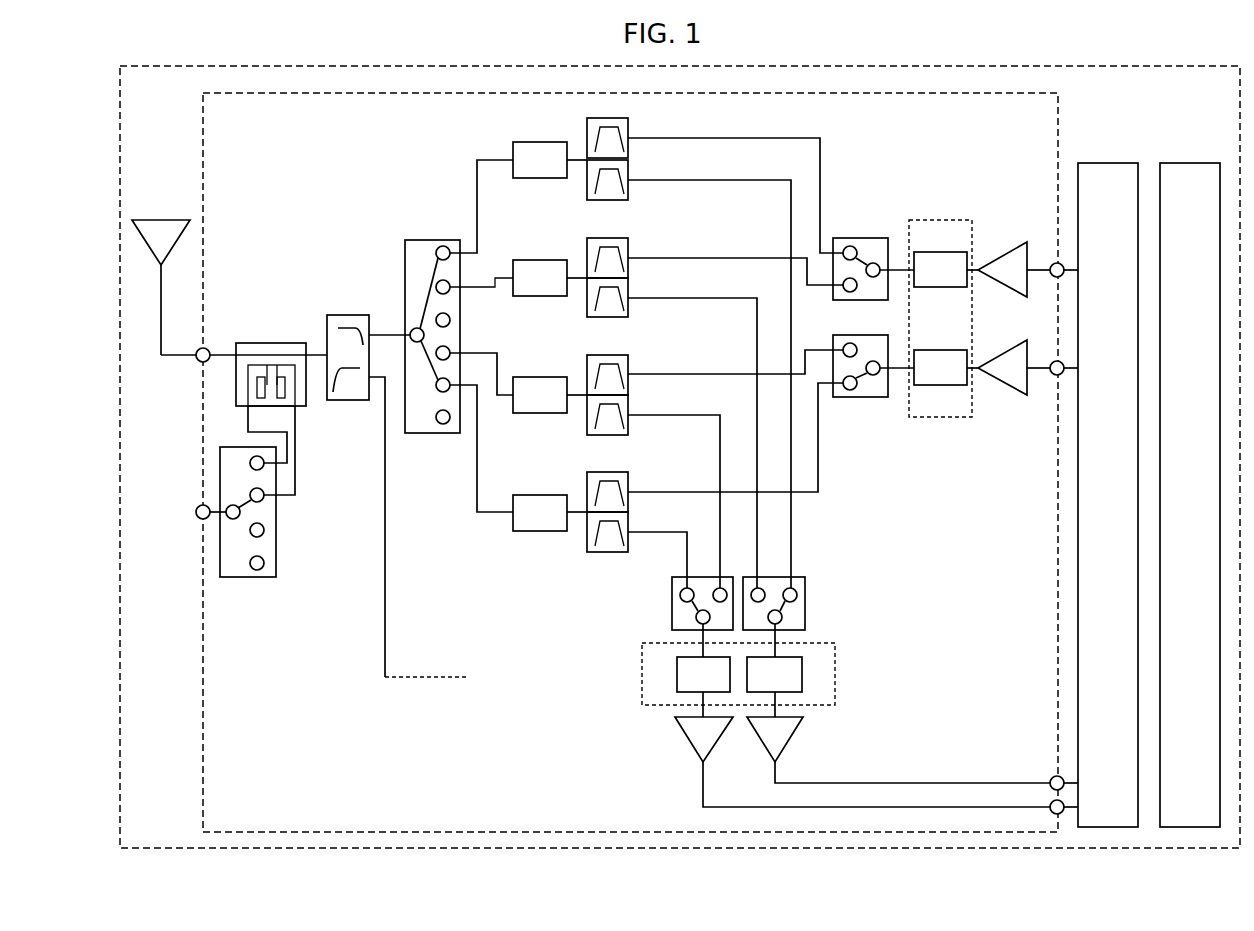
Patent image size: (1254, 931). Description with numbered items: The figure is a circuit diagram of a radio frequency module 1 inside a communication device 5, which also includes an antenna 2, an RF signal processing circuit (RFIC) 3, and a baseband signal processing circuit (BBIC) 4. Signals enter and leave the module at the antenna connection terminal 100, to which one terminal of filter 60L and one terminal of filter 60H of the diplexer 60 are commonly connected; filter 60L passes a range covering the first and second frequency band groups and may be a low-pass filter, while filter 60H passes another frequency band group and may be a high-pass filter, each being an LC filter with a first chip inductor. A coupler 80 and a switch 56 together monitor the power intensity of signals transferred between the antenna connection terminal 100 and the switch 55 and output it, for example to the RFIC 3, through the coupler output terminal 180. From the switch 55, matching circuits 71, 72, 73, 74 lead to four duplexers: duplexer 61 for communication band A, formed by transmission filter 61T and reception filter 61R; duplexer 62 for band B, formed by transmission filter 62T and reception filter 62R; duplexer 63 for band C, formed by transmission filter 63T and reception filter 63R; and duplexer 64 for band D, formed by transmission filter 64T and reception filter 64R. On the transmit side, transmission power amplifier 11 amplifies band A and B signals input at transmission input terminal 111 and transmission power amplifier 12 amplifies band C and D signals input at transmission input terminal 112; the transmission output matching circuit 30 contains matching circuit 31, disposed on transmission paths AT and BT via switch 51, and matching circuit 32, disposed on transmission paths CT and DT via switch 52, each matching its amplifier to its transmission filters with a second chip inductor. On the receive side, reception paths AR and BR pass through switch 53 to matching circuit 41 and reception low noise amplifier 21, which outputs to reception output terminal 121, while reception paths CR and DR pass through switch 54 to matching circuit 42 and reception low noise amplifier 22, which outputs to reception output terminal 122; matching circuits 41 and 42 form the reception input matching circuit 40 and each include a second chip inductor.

The radio frequency module 1 is at (1022, 97).
The antenna 2 is at (168, 220).
The RF signal processing circuit (RFIC) 3 is at (1095, 163).
The baseband signal processing circuit (BBIC) 4 is at (1177, 163).
The communication device 5 is at (1197, 67).
The transmission power amplifier 11 is at (1000, 290).
The transmission power amplifier 12 is at (1000, 390).
The reception low noise amplifier 21 is at (795, 738).
The reception low noise amplifier 22 is at (680, 738).
The transmission output matching circuit 30 is at (947, 310).
The matching circuit 31 is at (925, 252).
The matching circuit 32 is at (925, 350).
The reception input matching circuit 40 is at (710, 670).
The matching circuit 41 is at (802, 675).
The matching circuit 42 is at (677, 675).
The switch 51 is at (848, 238).
The switch 52 is at (850, 335).
The switch 53 is at (805, 580).
The switch 54 is at (672, 582).
The switch 55 is at (412, 240).
The switch 56 is at (258, 578).
The diplexer 60 is at (305, 325).
The filter 60L is at (340, 315).
The filter 60H is at (327, 348).
The duplexer 61 is at (663, 161).
The transmission filter 61T is at (631, 128).
The reception filter 61R is at (631, 186).
The duplexer 62 is at (652, 277).
The transmission filter 62T is at (653, 235).
The reception filter 62R is at (653, 278).
The duplexer 63 is at (653, 392).
The transmission filter 63T is at (655, 348).
The reception filter 63R is at (653, 394).
The duplexer 64 is at (650, 508).
The transmission filter 64T is at (650, 461).
The reception filter 64R is at (652, 514).
The matching circuit 71 is at (548, 142).
The matching circuit 72 is at (548, 260).
The matching circuit 73 is at (548, 377).
The matching circuit 74 is at (548, 495).
The coupler 80 is at (258, 343).
The antenna connection terminal 100 is at (200, 363).
The transmission input terminal 111 is at (1054, 281).
The transmission input terminal 112 is at (1054, 379).
The reception output terminal 121 is at (1052, 777).
The reception output terminal 122 is at (1052, 805).
The coupler output terminal 180 is at (199, 520).
The transmission path AT is at (793, 138).
The reception path AR is at (757, 181).
The transmission path BT is at (740, 258).
The reception path BR is at (730, 298).
The transmission path CT is at (768, 374).
The reception path CR is at (695, 415).
The transmission path DT is at (730, 492).
The reception path DR is at (687, 565).